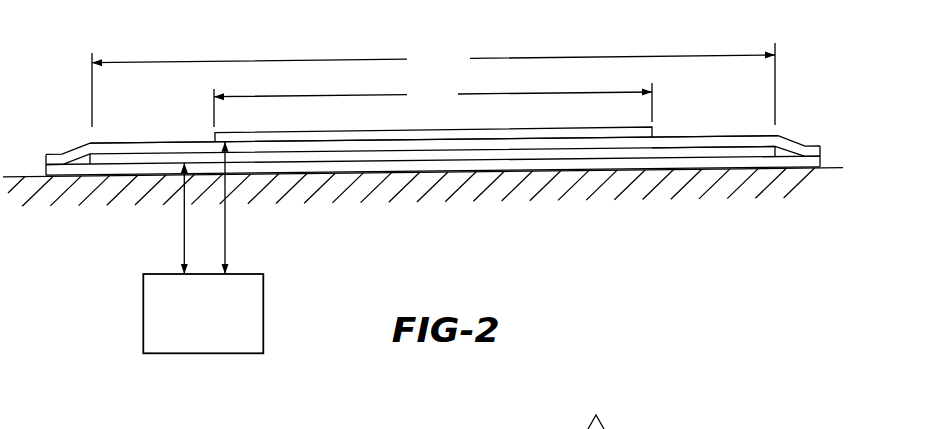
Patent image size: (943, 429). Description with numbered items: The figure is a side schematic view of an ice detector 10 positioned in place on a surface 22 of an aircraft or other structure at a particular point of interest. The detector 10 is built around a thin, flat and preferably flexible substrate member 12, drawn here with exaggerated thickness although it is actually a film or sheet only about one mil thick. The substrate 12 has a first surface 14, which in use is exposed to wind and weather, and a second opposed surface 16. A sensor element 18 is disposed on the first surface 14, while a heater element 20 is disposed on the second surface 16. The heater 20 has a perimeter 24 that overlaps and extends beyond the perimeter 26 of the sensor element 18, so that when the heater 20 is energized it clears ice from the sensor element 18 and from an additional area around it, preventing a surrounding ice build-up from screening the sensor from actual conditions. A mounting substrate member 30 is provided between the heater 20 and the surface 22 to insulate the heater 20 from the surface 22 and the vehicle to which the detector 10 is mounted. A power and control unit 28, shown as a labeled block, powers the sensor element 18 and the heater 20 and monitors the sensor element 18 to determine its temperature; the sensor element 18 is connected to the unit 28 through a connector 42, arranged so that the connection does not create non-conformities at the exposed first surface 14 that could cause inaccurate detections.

The ice detector 10 is at (826, 76).
The substrate member 12 is at (679, 136).
The first surface 14 is at (720, 136).
The second opposed surface 16 is at (690, 148).
The sensor element 18 is at (560, 135).
The heater element 20 is at (525, 157).
The surface 22 is at (427, 172).
The perimeter of heater 24 is at (433, 85).
The perimeter of sensor element 26 is at (433, 105).
The power and control unit 28 is at (173, 353).
The mounting substrate member 30 is at (358, 172).
The connector 42 is at (196, 233).